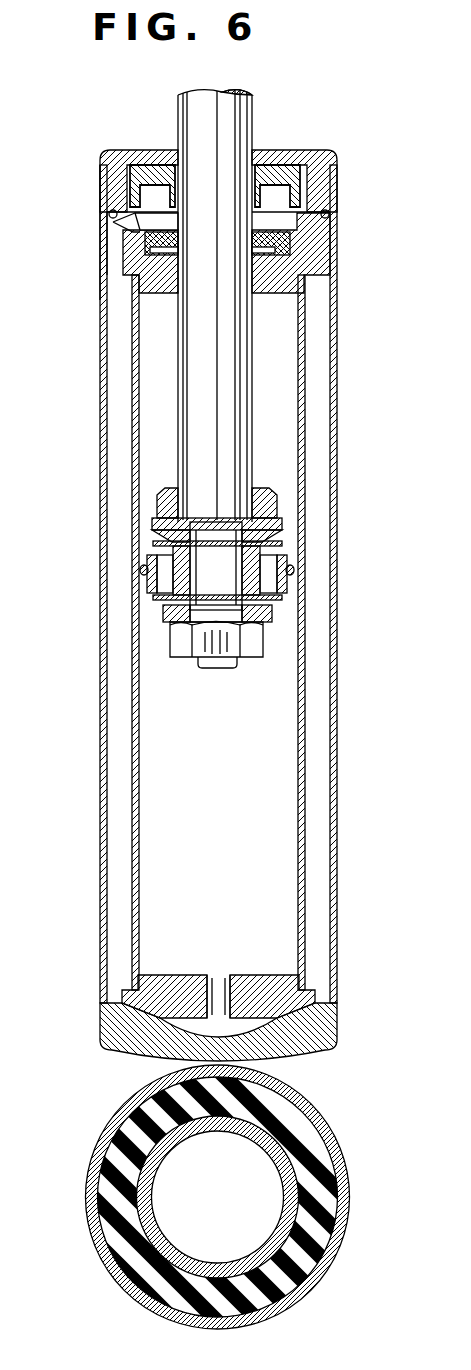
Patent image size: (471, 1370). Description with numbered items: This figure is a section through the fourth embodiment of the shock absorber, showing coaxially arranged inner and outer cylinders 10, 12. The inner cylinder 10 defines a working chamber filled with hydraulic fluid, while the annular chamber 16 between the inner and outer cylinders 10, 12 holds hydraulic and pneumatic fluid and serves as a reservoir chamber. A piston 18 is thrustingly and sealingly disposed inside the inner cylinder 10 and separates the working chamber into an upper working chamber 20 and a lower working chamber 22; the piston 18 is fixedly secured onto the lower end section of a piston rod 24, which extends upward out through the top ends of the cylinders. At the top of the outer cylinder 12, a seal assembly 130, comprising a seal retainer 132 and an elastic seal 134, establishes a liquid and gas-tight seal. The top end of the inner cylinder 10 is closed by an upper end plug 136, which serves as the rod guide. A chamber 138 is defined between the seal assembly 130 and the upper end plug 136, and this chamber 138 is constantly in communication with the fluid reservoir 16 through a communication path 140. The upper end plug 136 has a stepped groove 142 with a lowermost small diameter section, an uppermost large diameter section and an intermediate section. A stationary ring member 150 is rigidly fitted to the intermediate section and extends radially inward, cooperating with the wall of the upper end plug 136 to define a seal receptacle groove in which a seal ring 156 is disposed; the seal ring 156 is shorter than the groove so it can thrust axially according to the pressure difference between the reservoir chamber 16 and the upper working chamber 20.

The inner cylinder 10 is at (305, 453).
The outer cylinder 12 is at (338, 413).
The annular chamber 16 is at (323, 540).
The piston 18 is at (173, 597).
The upper working chamber 20 is at (145, 411).
The lower working chamber 22 is at (150, 772).
The piston rod 24 is at (245, 328).
The seal assembly 130 is at (308, 142).
The seal retainer 132 is at (337, 157).
The elastic seal 134 is at (263, 150).
The upper end plug 136 is at (326, 248).
The chamber 138 is at (297, 220).
The communication path 140 is at (103, 265).
The stepped groove 142 is at (148, 150).
The stationary ring member 150 is at (145, 240).
The seal ring 156 is at (262, 256).